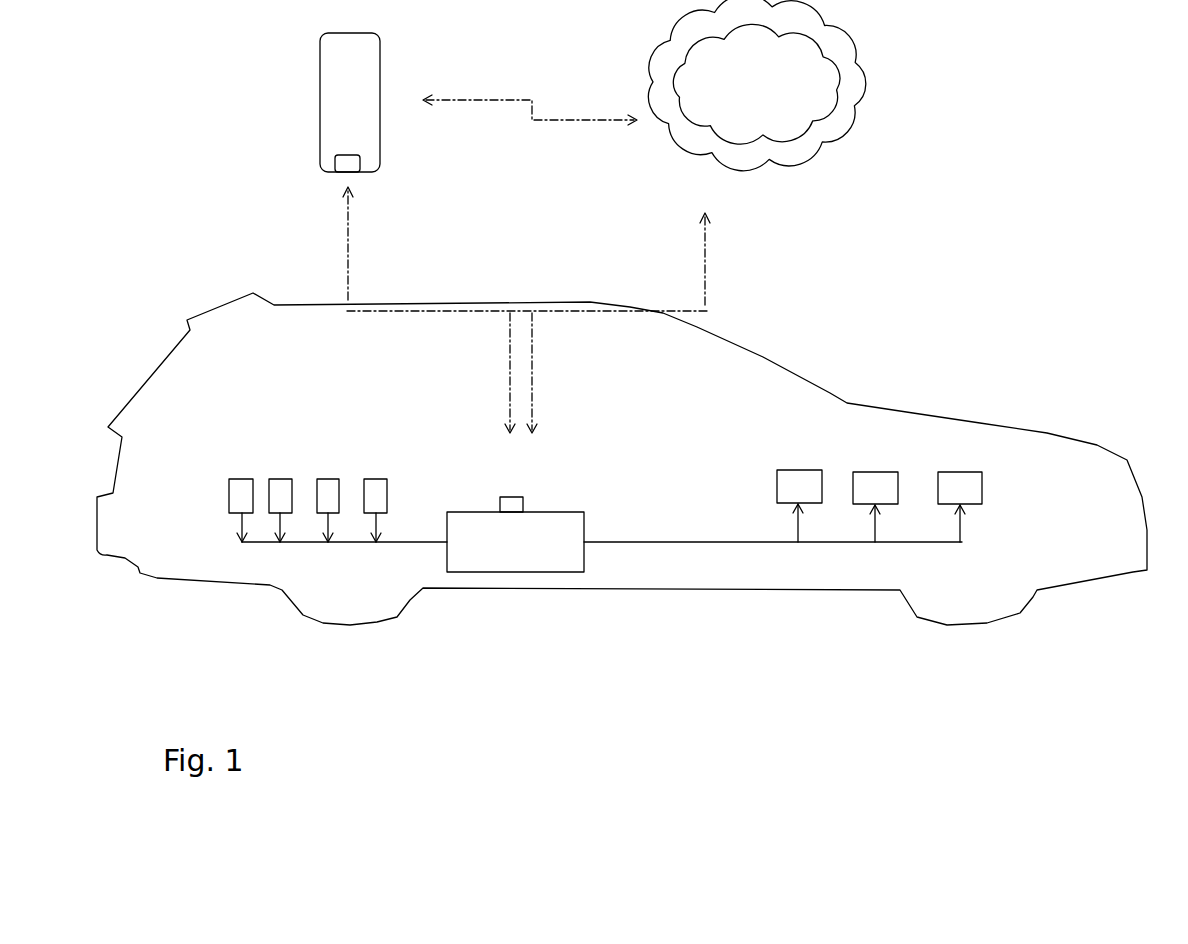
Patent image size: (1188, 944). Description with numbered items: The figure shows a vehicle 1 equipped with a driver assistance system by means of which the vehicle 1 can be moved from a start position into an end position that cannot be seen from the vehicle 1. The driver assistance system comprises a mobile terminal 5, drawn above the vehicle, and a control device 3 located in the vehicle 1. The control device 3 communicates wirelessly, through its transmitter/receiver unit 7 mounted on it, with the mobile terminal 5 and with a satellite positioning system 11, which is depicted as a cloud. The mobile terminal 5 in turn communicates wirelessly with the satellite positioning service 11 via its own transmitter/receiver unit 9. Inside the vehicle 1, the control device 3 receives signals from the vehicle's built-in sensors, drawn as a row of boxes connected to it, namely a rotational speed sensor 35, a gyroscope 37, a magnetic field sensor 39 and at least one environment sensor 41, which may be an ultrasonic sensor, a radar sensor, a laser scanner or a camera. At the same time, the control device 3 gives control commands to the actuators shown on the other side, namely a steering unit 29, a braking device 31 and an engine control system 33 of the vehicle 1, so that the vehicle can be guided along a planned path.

The vehicle 1 is at (183, 237).
The control device 3 is at (510, 572).
The mobile terminal 5 is at (335, 78).
The transmitter/receiver unit 7 is at (508, 497).
The transmitter/receiver unit 9 is at (375, 172).
The satellite positioning system 11 is at (744, 92).
The steering unit 29 is at (800, 485).
The braking device 31 is at (875, 475).
The engine control system 33 is at (960, 475).
The rotational speed sensor 35 is at (378, 479).
The gyroscope 37 is at (327, 479).
The magnetic field sensor 39 is at (278, 479).
The environment sensor 41 is at (235, 489).